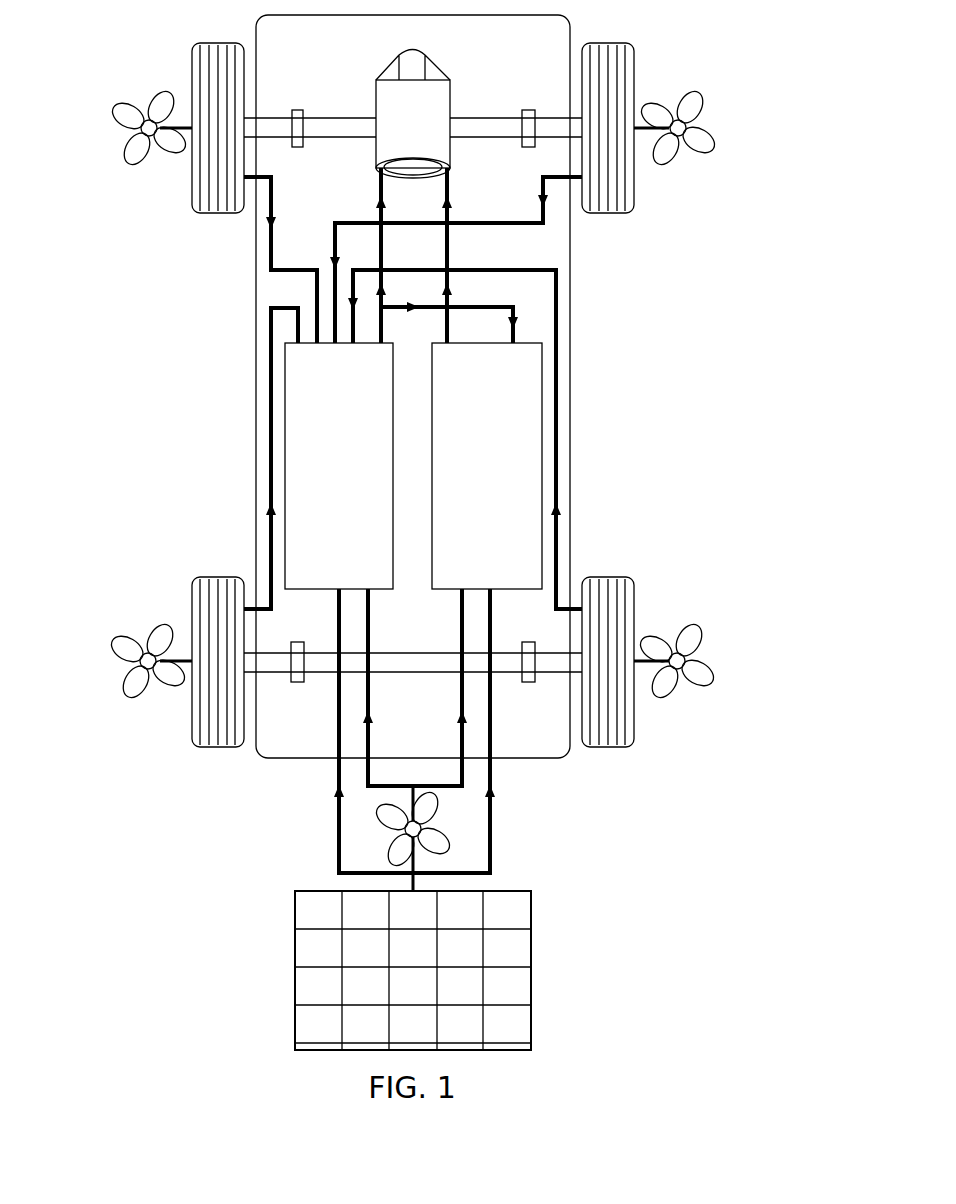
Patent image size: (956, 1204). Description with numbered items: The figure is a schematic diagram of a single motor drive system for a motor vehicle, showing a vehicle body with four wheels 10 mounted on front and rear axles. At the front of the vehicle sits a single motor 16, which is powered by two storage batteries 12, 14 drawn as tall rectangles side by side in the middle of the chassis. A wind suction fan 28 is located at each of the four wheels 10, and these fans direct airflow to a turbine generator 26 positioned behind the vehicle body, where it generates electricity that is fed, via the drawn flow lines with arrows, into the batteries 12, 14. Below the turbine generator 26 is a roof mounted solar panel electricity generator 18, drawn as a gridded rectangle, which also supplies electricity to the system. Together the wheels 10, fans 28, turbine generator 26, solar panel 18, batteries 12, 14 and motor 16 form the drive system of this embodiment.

The wheel 10 is at (192, 193).
The storage battery 12 is at (310, 372).
The storage battery 14 is at (505, 388).
The motor 16 is at (457, 60).
The roof mounted solar panel electricity generator 18 is at (540, 944).
The turbine generator 26 is at (457, 846).
The wind suction fan 28 is at (128, 177).